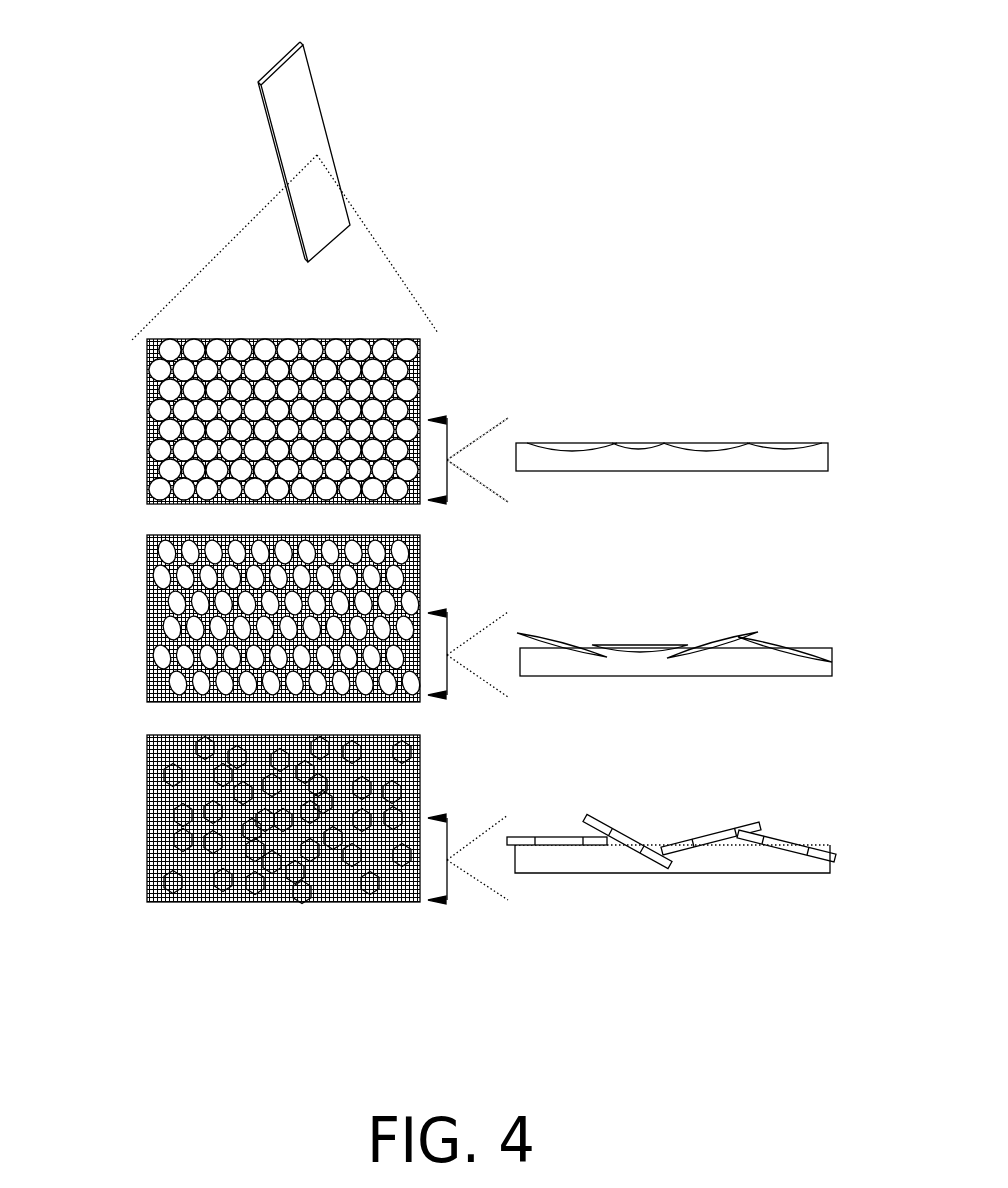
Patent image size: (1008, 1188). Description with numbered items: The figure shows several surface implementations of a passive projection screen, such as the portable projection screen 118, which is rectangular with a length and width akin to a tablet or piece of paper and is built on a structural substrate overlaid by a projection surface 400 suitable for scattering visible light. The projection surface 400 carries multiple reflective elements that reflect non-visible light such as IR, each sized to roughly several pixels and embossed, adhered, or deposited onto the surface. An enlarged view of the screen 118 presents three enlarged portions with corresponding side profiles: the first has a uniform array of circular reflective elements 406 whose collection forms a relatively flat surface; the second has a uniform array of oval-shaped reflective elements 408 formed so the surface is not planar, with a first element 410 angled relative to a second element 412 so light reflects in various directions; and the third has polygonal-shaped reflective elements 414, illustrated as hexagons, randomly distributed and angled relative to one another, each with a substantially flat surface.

The portable projection screen 118 is at (326, 148).
The projection surface 400 is at (303, 112).
The circular reflective elements 406 is at (263, 350).
The oval-shaped reflective elements 408 is at (257, 550).
The first element 410 is at (713, 650).
The second element 412 is at (638, 650).
The polygonal-shaped reflective elements 414 is at (320, 752).